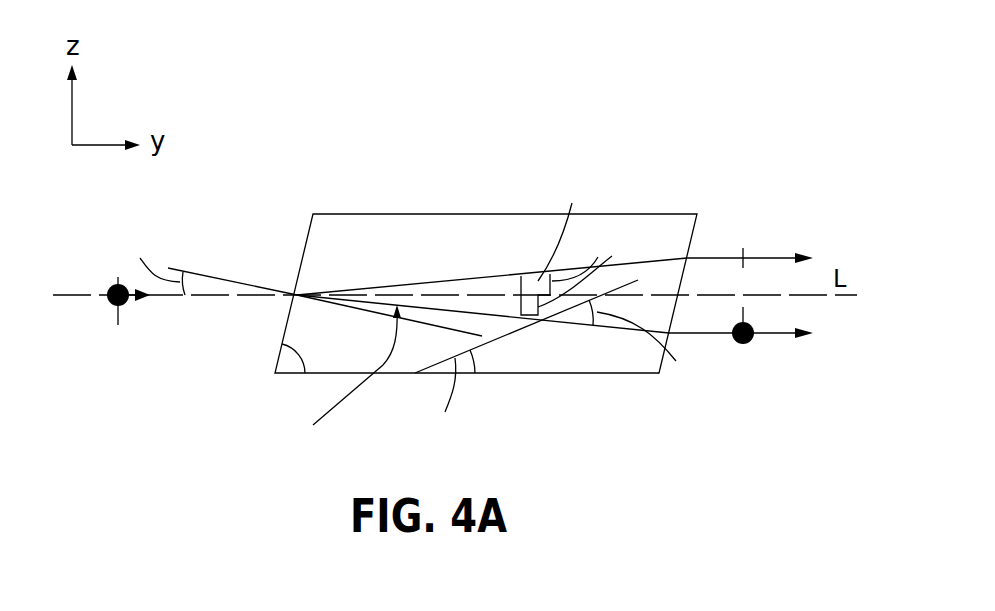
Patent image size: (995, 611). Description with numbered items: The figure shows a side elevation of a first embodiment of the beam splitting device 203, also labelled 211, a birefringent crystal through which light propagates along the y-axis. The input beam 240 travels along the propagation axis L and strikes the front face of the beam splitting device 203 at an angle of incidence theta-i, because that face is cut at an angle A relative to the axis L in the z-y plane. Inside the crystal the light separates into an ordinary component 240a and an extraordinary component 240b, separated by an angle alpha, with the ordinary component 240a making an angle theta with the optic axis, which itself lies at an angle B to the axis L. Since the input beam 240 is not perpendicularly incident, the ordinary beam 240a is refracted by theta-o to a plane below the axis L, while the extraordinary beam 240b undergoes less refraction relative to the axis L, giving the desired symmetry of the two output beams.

The beam splitting device 203 is at (461, 228).
The beam splitter device (alternate) 211 is at (412, 265).
The input beam 240 is at (83, 300).
The ordinary component 240a is at (798, 353).
The extraordinary component 240b is at (798, 238).